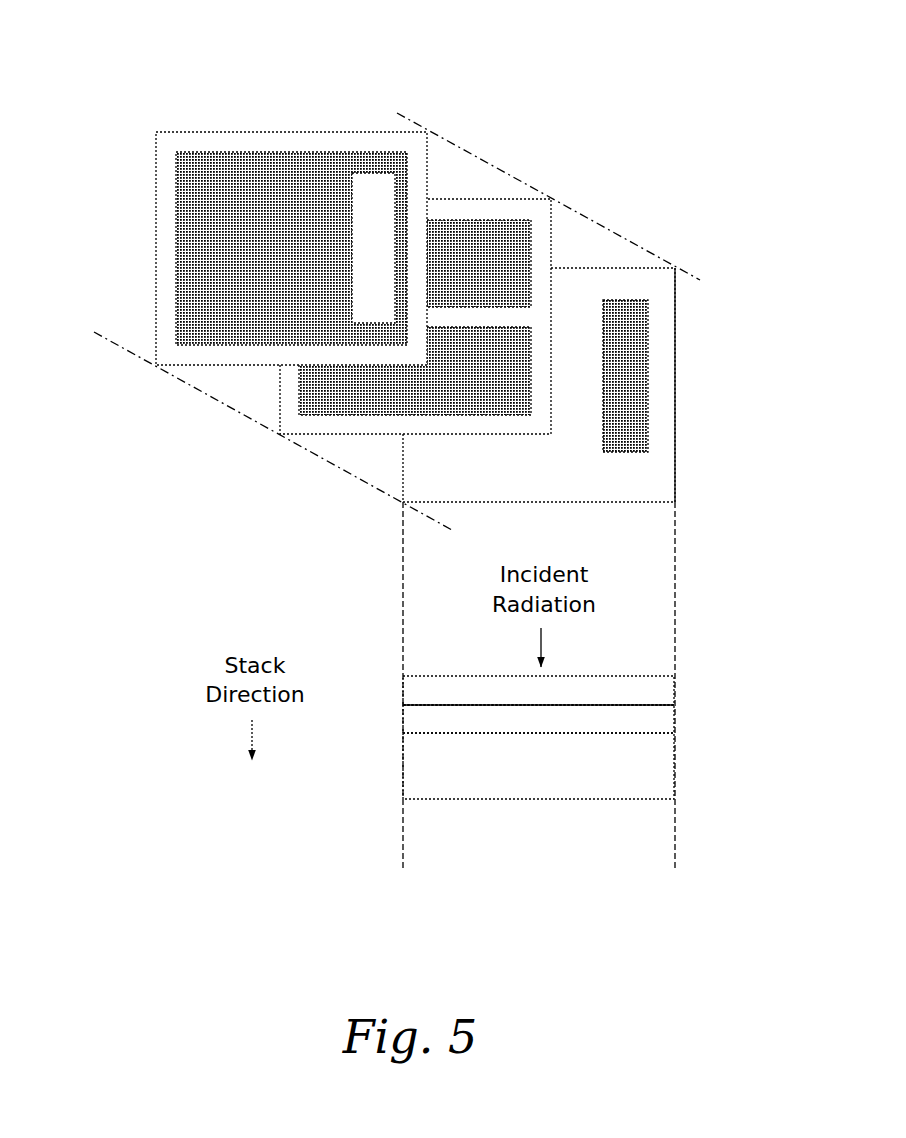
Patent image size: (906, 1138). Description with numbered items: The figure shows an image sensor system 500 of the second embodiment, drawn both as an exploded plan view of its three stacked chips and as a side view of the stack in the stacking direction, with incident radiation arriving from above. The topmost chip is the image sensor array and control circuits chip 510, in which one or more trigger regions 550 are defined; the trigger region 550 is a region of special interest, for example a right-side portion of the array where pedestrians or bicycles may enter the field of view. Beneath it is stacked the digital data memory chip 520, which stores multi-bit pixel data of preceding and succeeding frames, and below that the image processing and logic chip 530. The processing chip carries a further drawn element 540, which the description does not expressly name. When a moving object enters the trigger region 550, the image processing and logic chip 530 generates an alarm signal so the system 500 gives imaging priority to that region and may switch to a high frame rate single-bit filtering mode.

The image sensor system 500 is at (112, 70).
The image sensor array and control circuits chip 510 is at (293, 140).
The digital data memory chip 520 is at (532, 210).
The image processing and logic chip 530 is at (653, 766).
The third electrode element 540 is at (648, 287).
The trigger region 550 is at (382, 203).